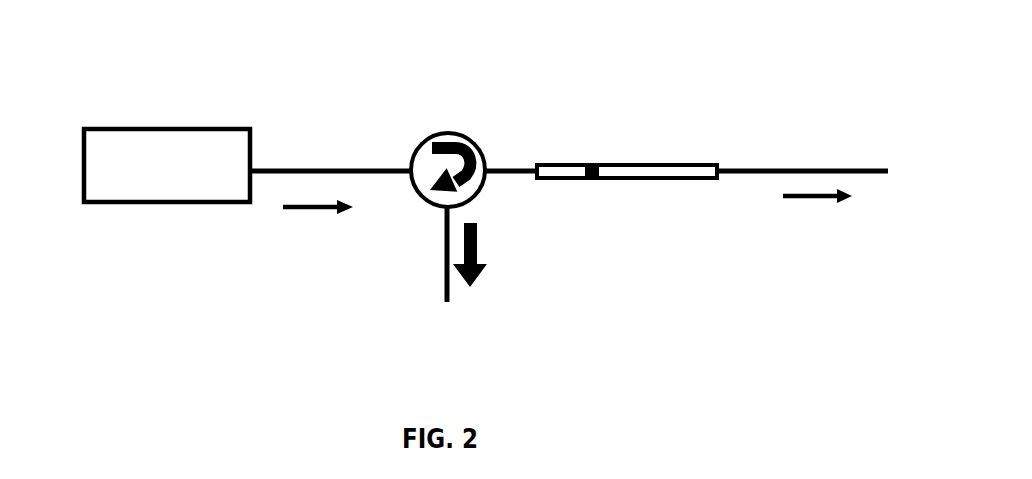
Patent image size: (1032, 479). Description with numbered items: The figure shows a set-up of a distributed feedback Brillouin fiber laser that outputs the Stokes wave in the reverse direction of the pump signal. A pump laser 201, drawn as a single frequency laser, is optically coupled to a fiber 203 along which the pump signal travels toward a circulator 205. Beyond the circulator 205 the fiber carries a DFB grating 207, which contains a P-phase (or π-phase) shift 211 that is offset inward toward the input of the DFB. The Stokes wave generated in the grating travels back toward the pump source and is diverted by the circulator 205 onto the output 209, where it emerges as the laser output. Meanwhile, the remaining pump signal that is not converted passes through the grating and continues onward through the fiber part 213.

The pump laser 201 is at (186, 187).
The fiber 203 is at (345, 165).
The circulator 205 is at (455, 135).
The DFB grating 207 is at (638, 148).
The output 209 is at (467, 287).
The P-phase shift 211 is at (603, 195).
The fiber part 213 is at (802, 162).